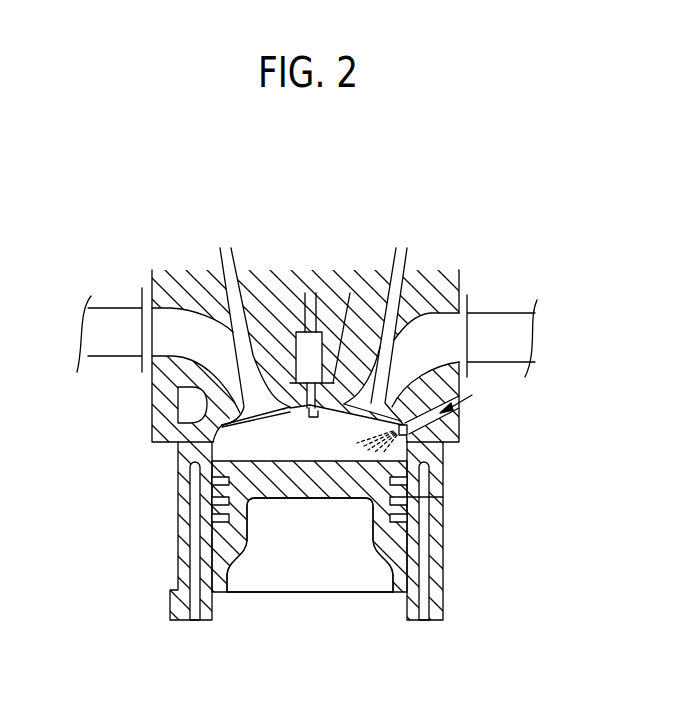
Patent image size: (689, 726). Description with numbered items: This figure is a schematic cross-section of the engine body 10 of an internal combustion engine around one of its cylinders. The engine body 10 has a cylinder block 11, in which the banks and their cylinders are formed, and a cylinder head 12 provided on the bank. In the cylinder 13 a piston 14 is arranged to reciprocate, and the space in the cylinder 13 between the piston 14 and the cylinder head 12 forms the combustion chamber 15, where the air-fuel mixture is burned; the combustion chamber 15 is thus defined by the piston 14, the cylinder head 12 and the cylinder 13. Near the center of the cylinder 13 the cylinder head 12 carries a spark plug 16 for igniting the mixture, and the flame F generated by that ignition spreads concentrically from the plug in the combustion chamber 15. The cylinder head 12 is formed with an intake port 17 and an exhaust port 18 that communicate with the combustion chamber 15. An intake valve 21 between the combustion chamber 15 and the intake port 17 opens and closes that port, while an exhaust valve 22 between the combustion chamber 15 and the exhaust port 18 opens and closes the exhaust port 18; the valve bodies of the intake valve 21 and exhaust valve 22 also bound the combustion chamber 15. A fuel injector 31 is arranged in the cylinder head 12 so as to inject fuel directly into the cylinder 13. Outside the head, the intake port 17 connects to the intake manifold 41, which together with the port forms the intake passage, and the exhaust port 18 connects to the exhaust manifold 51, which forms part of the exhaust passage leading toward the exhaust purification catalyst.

The engine body 10 is at (178, 543).
The cylinder block 11 is at (444, 602).
The cylinder head 12 is at (168, 398).
The cylinder 13 is at (212, 473).
The piston 14 is at (232, 530).
The combustion chamber 15 is at (250, 440).
The spark plug 16 is at (310, 352).
The intake port 17 is at (428, 313).
The exhaust port 18 is at (177, 308).
The intake valve 21 is at (395, 277).
The exhaust valve 22 is at (237, 303).
The fuel injector 31 is at (450, 444).
The intake manifold 41 is at (502, 363).
The exhaust manifold 51 is at (108, 357).
The flame F is at (348, 438).